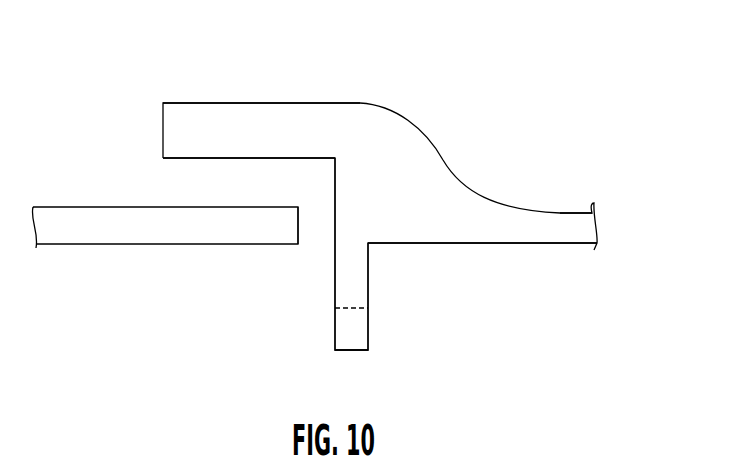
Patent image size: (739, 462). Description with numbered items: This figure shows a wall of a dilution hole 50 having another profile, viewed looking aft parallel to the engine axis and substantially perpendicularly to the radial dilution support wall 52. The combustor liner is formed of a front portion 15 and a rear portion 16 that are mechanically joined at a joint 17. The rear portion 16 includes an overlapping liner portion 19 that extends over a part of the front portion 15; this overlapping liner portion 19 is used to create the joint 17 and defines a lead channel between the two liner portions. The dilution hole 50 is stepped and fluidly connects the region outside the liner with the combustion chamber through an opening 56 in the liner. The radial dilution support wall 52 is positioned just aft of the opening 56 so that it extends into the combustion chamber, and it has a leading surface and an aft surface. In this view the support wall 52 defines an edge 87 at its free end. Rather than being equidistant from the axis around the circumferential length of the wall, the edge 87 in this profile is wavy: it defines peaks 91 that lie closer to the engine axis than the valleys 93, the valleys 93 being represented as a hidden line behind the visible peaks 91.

The front portion 15 is at (135, 245).
The rear portion 16 is at (518, 245).
The joint 17 is at (438, 98).
The overlapping liner portion 19 is at (212, 103).
The dilution hole 50 is at (130, 162).
The radial dilution support wall 52 is at (368, 260).
The opening 56 is at (298, 245).
The edge 87 is at (343, 350).
The peaks 91 is at (358, 350).
The valleys 93 is at (334, 308).